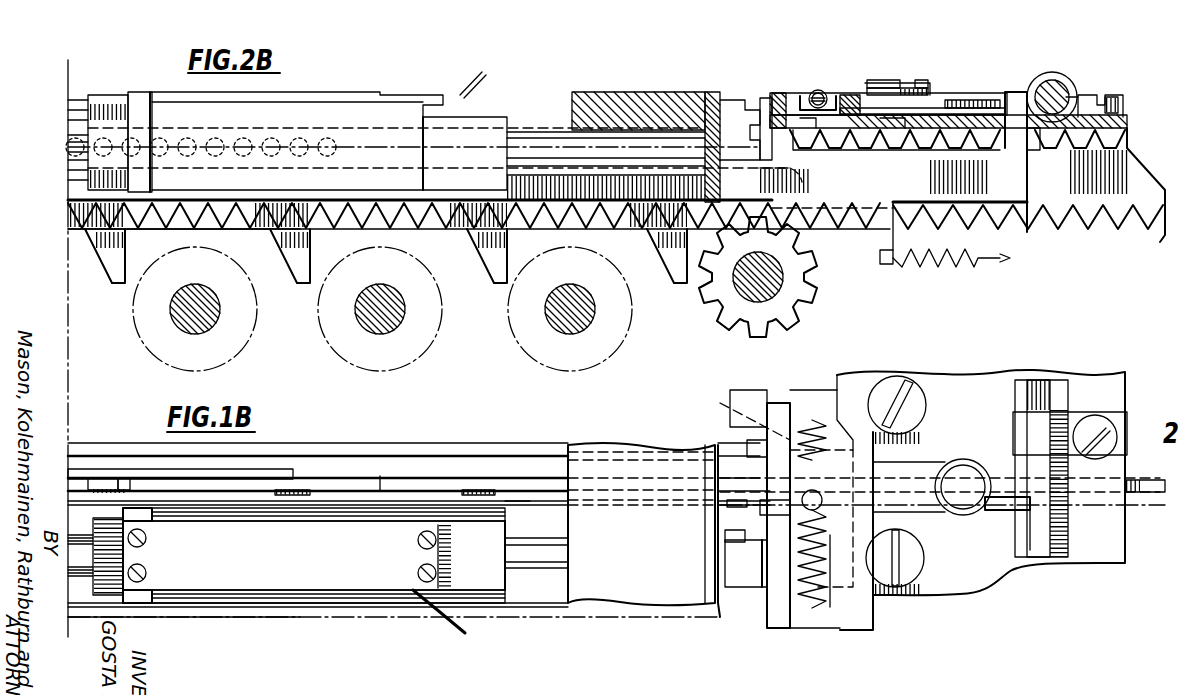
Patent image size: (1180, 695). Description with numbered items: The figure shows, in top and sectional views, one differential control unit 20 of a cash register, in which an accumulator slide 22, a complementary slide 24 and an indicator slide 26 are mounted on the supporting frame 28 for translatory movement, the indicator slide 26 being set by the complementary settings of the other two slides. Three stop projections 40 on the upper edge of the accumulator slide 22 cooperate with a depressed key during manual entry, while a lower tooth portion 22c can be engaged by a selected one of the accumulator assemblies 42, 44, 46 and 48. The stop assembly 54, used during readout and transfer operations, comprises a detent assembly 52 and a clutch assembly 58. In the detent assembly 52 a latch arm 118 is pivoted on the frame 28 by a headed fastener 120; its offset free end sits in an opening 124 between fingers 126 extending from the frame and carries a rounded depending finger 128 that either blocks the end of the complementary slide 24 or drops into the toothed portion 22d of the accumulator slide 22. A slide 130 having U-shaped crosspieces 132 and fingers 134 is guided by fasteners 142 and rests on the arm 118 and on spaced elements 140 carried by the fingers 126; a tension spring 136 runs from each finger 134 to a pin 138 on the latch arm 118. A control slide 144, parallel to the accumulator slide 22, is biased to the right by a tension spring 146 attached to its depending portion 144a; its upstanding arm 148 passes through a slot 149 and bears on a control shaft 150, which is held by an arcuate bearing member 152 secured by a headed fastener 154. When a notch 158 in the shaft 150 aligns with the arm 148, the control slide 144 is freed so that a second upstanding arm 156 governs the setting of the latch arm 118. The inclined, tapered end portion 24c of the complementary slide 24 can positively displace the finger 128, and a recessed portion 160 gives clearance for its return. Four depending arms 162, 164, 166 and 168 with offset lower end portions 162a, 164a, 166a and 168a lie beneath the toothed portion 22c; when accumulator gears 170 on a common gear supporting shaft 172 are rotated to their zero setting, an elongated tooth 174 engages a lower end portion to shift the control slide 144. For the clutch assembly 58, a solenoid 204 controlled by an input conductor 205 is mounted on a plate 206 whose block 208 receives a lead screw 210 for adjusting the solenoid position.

In FIG. 1B, the differential control unit 20 is at (1039, 587).
In FIG. 2B, the accumulator slide 22 is at (1140, 175).
In FIG. 1B, the accumulator slide 22 is at (1150, 480).
In FIG. 2B, the lower tooth portion 22c is at (1073, 246).
In FIG. 2B, the toothed portion 22d is at (1129, 135).
In FIG. 1B, the complementary slide 24 is at (353, 458).
In FIG. 2B, the end portion 24c is at (810, 190).
In FIG. 1B, the end portion 24c is at (741, 415).
In FIG. 1B, the indicator slide 26 is at (237, 472).
In FIG. 2B, the supporting frame 28 is at (640, 102).
In FIG. 1B, the supporting frame 28 is at (605, 470).
In FIG. 2B, the stop projections 40 is at (117, 97).
In FIG. 1B, the stop projections 40 is at (103, 480).
In FIG. 2B, the accumulator assembly 42 is at (124, 326).
In FIG. 2B, the accumulator assembly 44 is at (316, 326).
In FIG. 2B, the accumulator assembly 46 is at (501, 326).
In FIG. 2B, the accumulator assembly 48 is at (799, 320).
In FIG. 2B, the detent assembly 52 is at (891, 45).
In FIG. 2B, the stop assembly 54 is at (603, 55).
In FIG. 1B, the stop assembly 54 is at (627, 661).
In FIG. 2B, the clutch assembly 58 is at (325, 80).
In FIG. 1B, the clutch assembly 58 is at (280, 641).
In FIG. 2B, the latch arm 118 is at (930, 106).
In FIG. 2B, the headed fastener 120 is at (990, 68).
In FIG. 1B, the headed fastener 120 is at (965, 468).
In FIG. 1B, the opening 124 is at (728, 536).
In FIG. 2B, the fingers 126 is at (712, 98).
In FIG. 1B, the fingers 126 is at (784, 400).
In FIG. 2B, the depending finger 128 is at (812, 118).
In FIG. 1B, the depending finger 128 is at (762, 452).
In FIG. 2B, the slide 130 is at (840, 96).
In FIG. 1B, the slide 130 is at (840, 392).
In FIG. 2B, the U-shaped crosspieces 132 is at (905, 120).
In FIG. 1B, the U-shaped crosspieces 132 is at (775, 560).
In FIG. 1B, the fingers 134 is at (772, 628).
In FIG. 2B, the tension spring 136 is at (808, 93).
In FIG. 1B, the tension spring 136 is at (812, 610).
In FIG. 2B, the pin 138 is at (837, 82).
In FIG. 1B, the pin 138 is at (802, 505).
In FIG. 2B, the spaced elements 140 is at (730, 92).
In FIG. 1B, the spaced elements 140 is at (728, 565).
In FIG. 2B, the fasteners 142 is at (922, 88).
In FIG. 1B, the fasteners 142 is at (902, 385).
In FIG. 2B, the control slide 144 is at (1014, 234).
In FIG. 1B, the control slide 144 is at (518, 498).
In FIG. 2B, the depending portion 144a is at (886, 266).
In FIG. 2B, the tension spring 146 is at (931, 270).
In FIG. 2B, the upstanding arm 148 is at (1013, 92).
In FIG. 1B, the upstanding arm 148 is at (1016, 511).
In FIG. 2B, the slot 149 is at (1028, 152).
In FIG. 1B, the slot 149 is at (1022, 543).
In FIG. 2B, the control shaft 150 is at (1073, 91).
In FIG. 1B, the control shaft 150 is at (1030, 385).
In FIG. 2B, the arcuate bearing member 152 is at (1060, 90).
In FIG. 1B, the arcuate bearing member 152 is at (1058, 385).
In FIG. 2B, the headed fastener 154 is at (1114, 96).
In FIG. 1B, the headed fastener 154 is at (1096, 415).
In FIG. 2B, the second upstanding arm 156 is at (761, 100).
In FIG. 1B, the second upstanding arm 156 is at (727, 504).
In FIG. 2B, the notch 158 is at (1047, 81).
In FIG. 1B, the notch 158 is at (1048, 520).
In FIG. 2B, the recessed portion 160 is at (762, 100).
In FIG. 1B, the recessed portion 160 is at (727, 440).
In FIG. 2B, the depending arm 162 is at (122, 234).
In FIG. 1B, the depending arm 162 is at (120, 485).
In FIG. 2B, the lower end portion 162a is at (112, 280).
In FIG. 2B, the depending arm 164 is at (307, 234).
In FIG. 1B, the depending arm 164 is at (292, 497).
In FIG. 2B, the lower end portion 164a is at (298, 280).
In FIG. 2B, the depending arm 166 is at (504, 234).
In FIG. 1B, the depending arm 166 is at (476, 488).
In FIG. 2B, the lower end portion 166a is at (485, 280).
In FIG. 2B, the depending arm 168 is at (650, 236).
In FIG. 2B, the lower end portion 168a is at (678, 280).
In FIG. 2B, the accumulator gears 170 is at (728, 310).
In FIG. 2B, the gear supporting shaft 172 is at (773, 273).
In FIG. 2B, the elongated tooth 174 is at (705, 283).
In FIG. 2B, the solenoid 204 is at (160, 82).
In FIG. 1B, the solenoid 204 is at (215, 605).
In FIG. 2B, the input conductor 205 is at (463, 92).
In FIG. 1B, the input conductor 205 is at (424, 629).
In FIG. 1B, the plate 206 is at (140, 607).
In FIG. 2B, the block 208 is at (462, 137).
In FIG. 1B, the block 208 is at (465, 600).
In FIG. 2B, the lead screw 210 is at (540, 135).
In FIG. 1B, the lead screw 210 is at (532, 565).